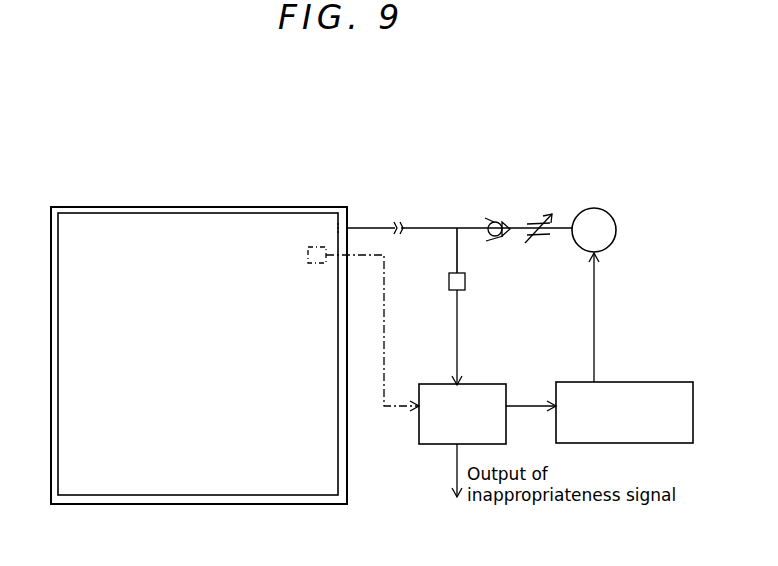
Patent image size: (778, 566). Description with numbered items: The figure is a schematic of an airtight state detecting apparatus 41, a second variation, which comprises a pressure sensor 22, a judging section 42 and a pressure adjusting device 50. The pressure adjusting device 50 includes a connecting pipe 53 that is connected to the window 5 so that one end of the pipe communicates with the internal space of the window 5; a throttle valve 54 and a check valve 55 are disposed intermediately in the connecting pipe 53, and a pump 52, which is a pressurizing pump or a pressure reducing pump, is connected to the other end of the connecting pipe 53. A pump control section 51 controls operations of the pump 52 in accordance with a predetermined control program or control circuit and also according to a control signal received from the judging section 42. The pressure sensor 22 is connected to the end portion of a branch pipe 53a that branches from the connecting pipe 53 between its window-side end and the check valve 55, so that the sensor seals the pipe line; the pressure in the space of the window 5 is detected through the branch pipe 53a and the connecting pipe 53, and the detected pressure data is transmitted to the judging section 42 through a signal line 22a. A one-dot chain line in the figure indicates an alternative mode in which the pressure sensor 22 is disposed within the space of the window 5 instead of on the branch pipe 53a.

The window 5 is at (184, 186).
The pressure sensor 22 is at (310, 247).
The signal line 22a is at (457, 316).
The airtight state detecting apparatus 41 is at (455, 197).
The judging section 42 is at (443, 444).
The pressure adjusting device 50 is at (582, 199).
The pump control section 51 is at (693, 405).
The pump 52 is at (616, 232).
The connecting pipe 53 is at (381, 228).
The branch pipe 53a is at (457, 255).
The throttle valve 54 is at (552, 215).
The check valve 55 is at (495, 221).